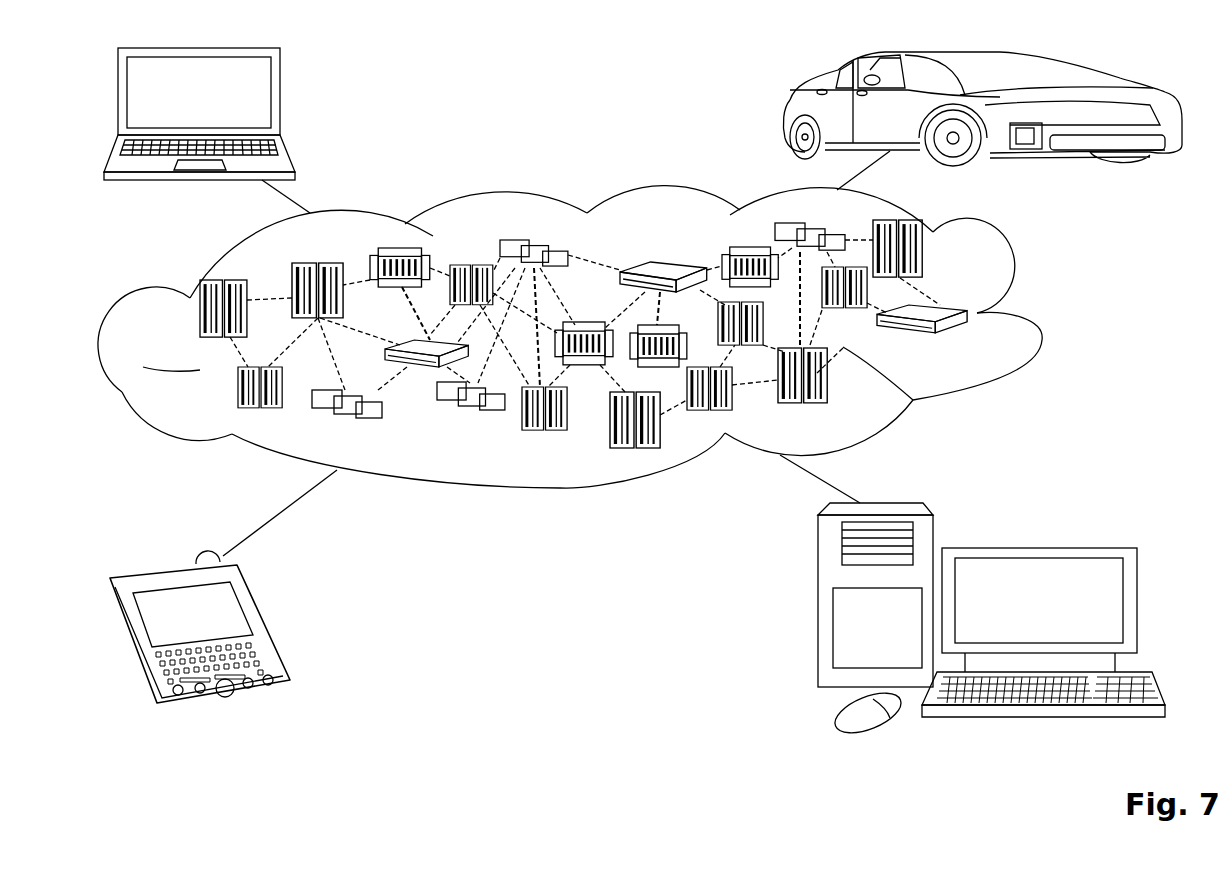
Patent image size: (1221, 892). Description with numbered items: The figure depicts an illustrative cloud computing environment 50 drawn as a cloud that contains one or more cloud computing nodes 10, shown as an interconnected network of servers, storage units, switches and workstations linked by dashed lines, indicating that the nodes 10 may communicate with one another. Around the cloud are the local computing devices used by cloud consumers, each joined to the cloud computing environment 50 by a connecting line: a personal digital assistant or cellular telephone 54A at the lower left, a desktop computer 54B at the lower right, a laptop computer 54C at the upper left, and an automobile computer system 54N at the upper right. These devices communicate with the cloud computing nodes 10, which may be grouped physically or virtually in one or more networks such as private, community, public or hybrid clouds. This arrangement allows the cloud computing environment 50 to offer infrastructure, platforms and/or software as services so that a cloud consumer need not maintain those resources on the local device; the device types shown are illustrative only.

The cloud computing nodes 10 is at (978, 345).
The cloud computing environment 50 is at (1032, 317).
The personal digital assistant (PDA) or cellular telephone 54A is at (272, 624).
The desktop computer 54B is at (1038, 548).
The laptop computer 54C is at (282, 98).
The automobile computer system 54N is at (785, 112).